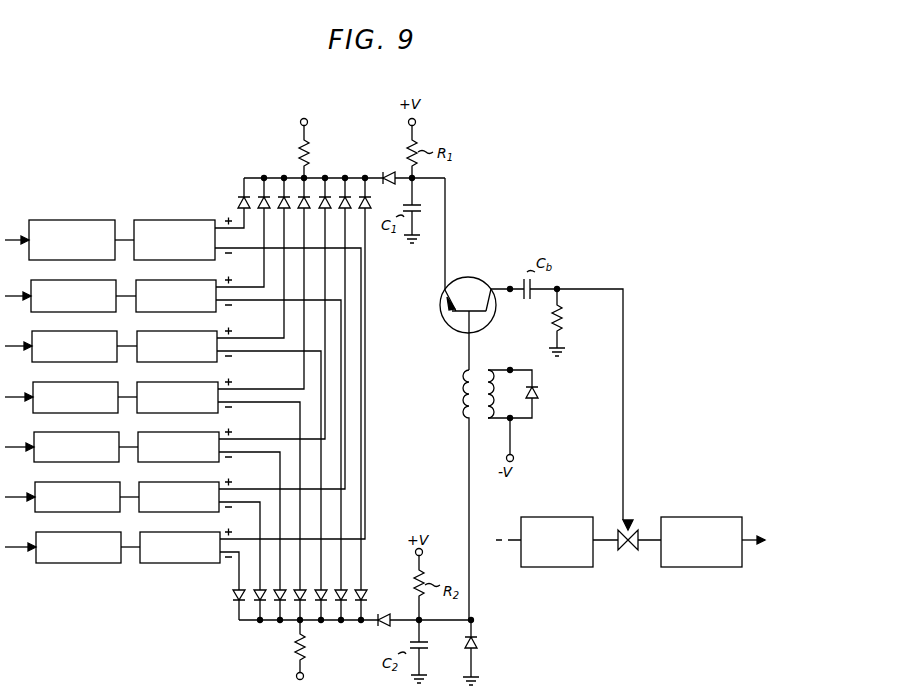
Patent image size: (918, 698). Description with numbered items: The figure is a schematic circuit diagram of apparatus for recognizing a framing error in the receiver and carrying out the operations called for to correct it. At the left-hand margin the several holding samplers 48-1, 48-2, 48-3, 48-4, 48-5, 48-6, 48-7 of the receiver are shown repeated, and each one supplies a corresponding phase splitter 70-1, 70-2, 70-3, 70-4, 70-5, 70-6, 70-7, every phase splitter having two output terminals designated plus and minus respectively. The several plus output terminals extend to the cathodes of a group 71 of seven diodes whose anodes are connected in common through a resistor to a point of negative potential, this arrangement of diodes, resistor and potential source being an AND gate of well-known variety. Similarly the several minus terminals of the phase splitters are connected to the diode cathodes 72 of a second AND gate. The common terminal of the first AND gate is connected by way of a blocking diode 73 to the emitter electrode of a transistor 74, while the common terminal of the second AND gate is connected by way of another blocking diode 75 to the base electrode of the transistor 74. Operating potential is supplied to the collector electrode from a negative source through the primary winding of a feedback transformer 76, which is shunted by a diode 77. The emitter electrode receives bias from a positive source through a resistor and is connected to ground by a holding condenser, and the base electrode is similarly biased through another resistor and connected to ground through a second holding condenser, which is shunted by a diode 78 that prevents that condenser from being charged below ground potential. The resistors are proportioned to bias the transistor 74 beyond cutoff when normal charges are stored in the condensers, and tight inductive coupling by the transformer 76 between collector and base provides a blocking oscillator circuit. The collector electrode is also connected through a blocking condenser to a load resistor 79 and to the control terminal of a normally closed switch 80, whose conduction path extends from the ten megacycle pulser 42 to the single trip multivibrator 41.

The holding sampler 48-1 is at (73, 220).
The holding sampler 48-2 is at (56, 281).
The holding sampler 48-3 is at (57, 331).
The holding sampler 48-4 is at (58, 382).
The holding sampler 48-5 is at (59, 432).
The holding sampler 48-6 is at (60, 482).
The holding sampler 48-7 is at (61, 532).
The phase splitter 70-1 is at (167, 220).
The phase splitter 70-2 is at (157, 281).
The phase splitter 70-3 is at (158, 331).
The phase splitter 70-4 is at (159, 382).
The phase splitter 70-5 is at (160, 432).
The phase splitter 70-6 is at (161, 482).
The phase splitter 70-7 is at (162, 532).
The group of diodes 71 is at (276, 164).
The diode cathodes of second AND gate 72 is at (268, 647).
The blocking diode 73 is at (386, 171).
The transistor 74 is at (470, 280).
The blocking diode 75 is at (386, 611).
The feedback transformer 76 is at (462, 388).
The diode 77 is at (538, 393).
The diode 78 is at (478, 644).
The load resistor 79 is at (563, 322).
The switch 80 is at (630, 552).
The single trip multivibrator 41 is at (690, 516).
The 10 megacycle pulser 42 is at (542, 516).